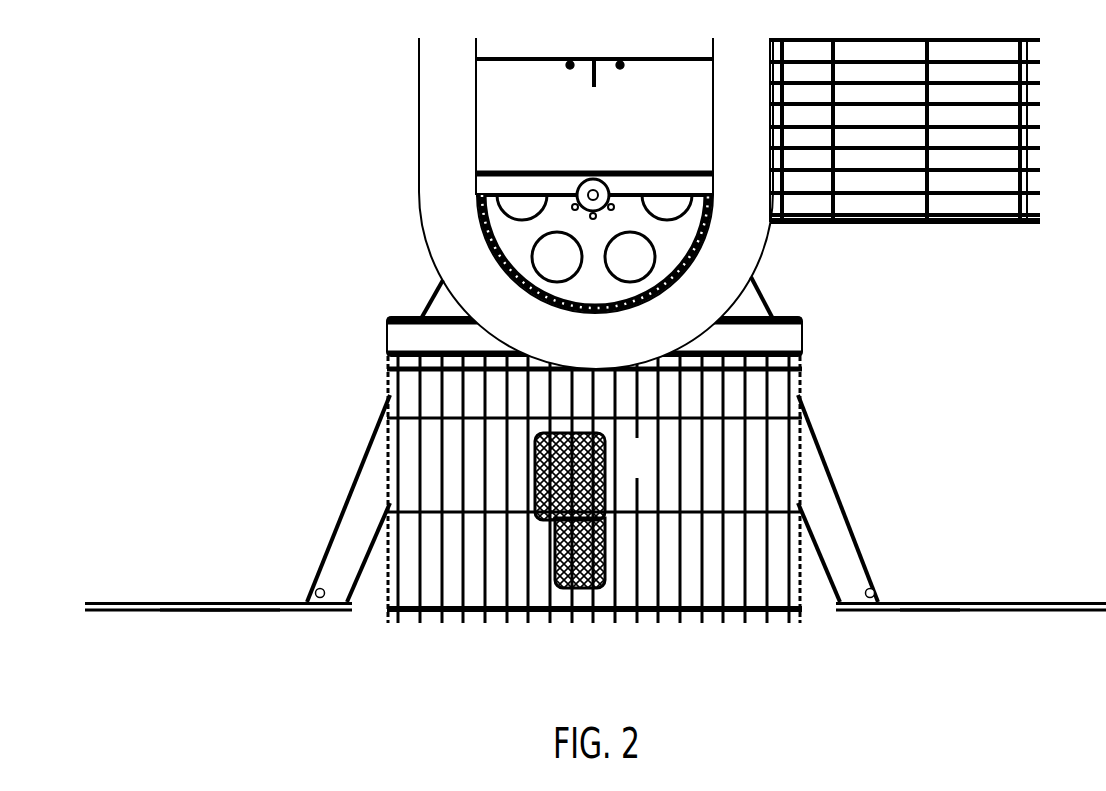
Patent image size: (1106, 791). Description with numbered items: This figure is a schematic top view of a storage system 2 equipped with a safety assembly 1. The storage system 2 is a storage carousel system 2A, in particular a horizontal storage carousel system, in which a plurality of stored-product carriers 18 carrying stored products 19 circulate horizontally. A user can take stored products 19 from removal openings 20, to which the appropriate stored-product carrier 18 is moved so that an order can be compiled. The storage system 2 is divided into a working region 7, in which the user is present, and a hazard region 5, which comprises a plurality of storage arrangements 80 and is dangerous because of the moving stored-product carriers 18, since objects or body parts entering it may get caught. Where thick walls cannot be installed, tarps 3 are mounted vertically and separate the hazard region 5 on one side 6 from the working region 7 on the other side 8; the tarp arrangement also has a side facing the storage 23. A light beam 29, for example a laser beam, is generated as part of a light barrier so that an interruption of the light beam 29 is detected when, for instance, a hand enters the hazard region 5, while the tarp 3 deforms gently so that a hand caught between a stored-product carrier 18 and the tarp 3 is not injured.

The safety assembly 1 is at (236, 446).
The storage system 2 is at (284, 219).
The storage carousel system 2A is at (284, 173).
The tarp 3 is at (203, 598).
The hazard region 5 is at (267, 493).
The one side 6 is at (255, 572).
The working region 7 is at (237, 644).
The other side 8 is at (196, 618).
The stored-product carrier 18 is at (654, 473).
The stored products 19 is at (583, 589).
The removal opening 20 is at (493, 645).
The side facing the storage 23 is at (939, 588).
The light beam 29 is at (318, 589).
The storage arrangement 80 is at (359, 262).